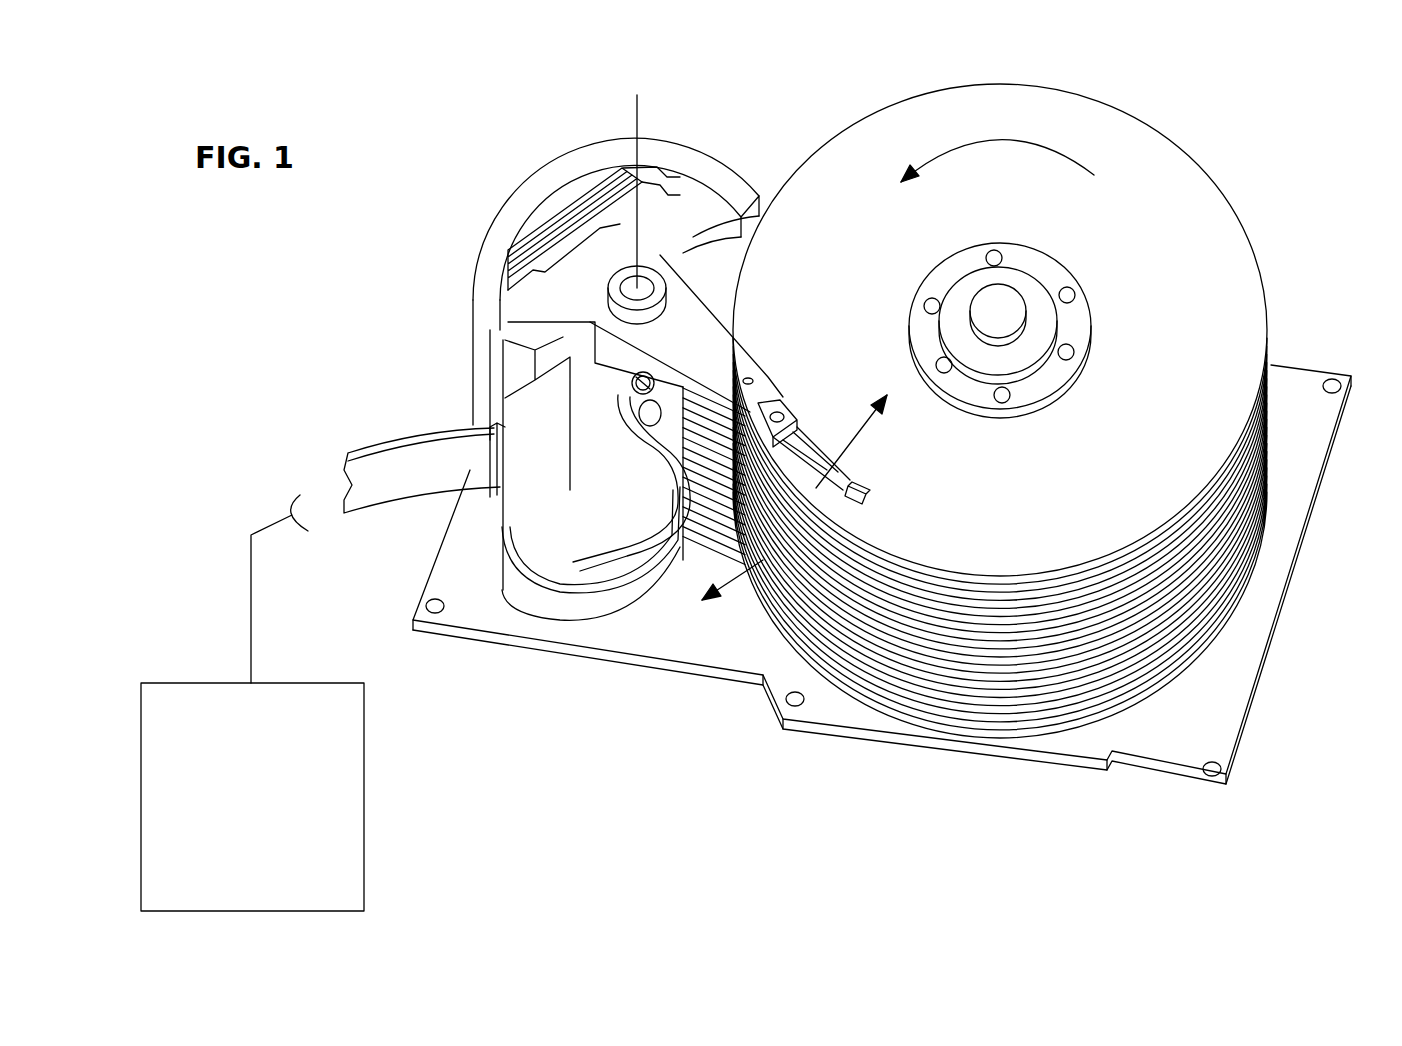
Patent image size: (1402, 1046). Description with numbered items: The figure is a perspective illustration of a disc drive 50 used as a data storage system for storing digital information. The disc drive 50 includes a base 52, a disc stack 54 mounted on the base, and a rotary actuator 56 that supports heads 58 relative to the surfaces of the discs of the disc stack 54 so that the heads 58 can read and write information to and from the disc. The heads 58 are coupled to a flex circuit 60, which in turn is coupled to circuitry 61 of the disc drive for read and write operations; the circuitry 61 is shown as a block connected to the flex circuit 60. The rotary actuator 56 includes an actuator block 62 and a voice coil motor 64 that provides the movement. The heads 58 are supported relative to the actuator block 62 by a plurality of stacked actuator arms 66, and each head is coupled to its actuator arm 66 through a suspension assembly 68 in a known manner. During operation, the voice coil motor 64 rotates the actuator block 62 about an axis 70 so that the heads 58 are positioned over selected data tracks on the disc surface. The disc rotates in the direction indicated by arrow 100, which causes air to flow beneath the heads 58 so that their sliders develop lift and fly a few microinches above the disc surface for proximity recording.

The disc drive 50 is at (1287, 212).
The base 52 is at (1306, 452).
The disc stack 54 is at (1142, 227).
The rotary actuator 56 is at (683, 292).
The heads 58 is at (866, 497).
The flex circuit 60 is at (585, 593).
The circuitry 61 is at (362, 766).
The actuator block 62 is at (703, 320).
The voice coil motor 64 is at (517, 200).
The actuator arms 66 is at (758, 372).
The suspension assemblies 68 is at (797, 420).
The axis 70 is at (636, 170).
The arrow 100 is at (980, 140).